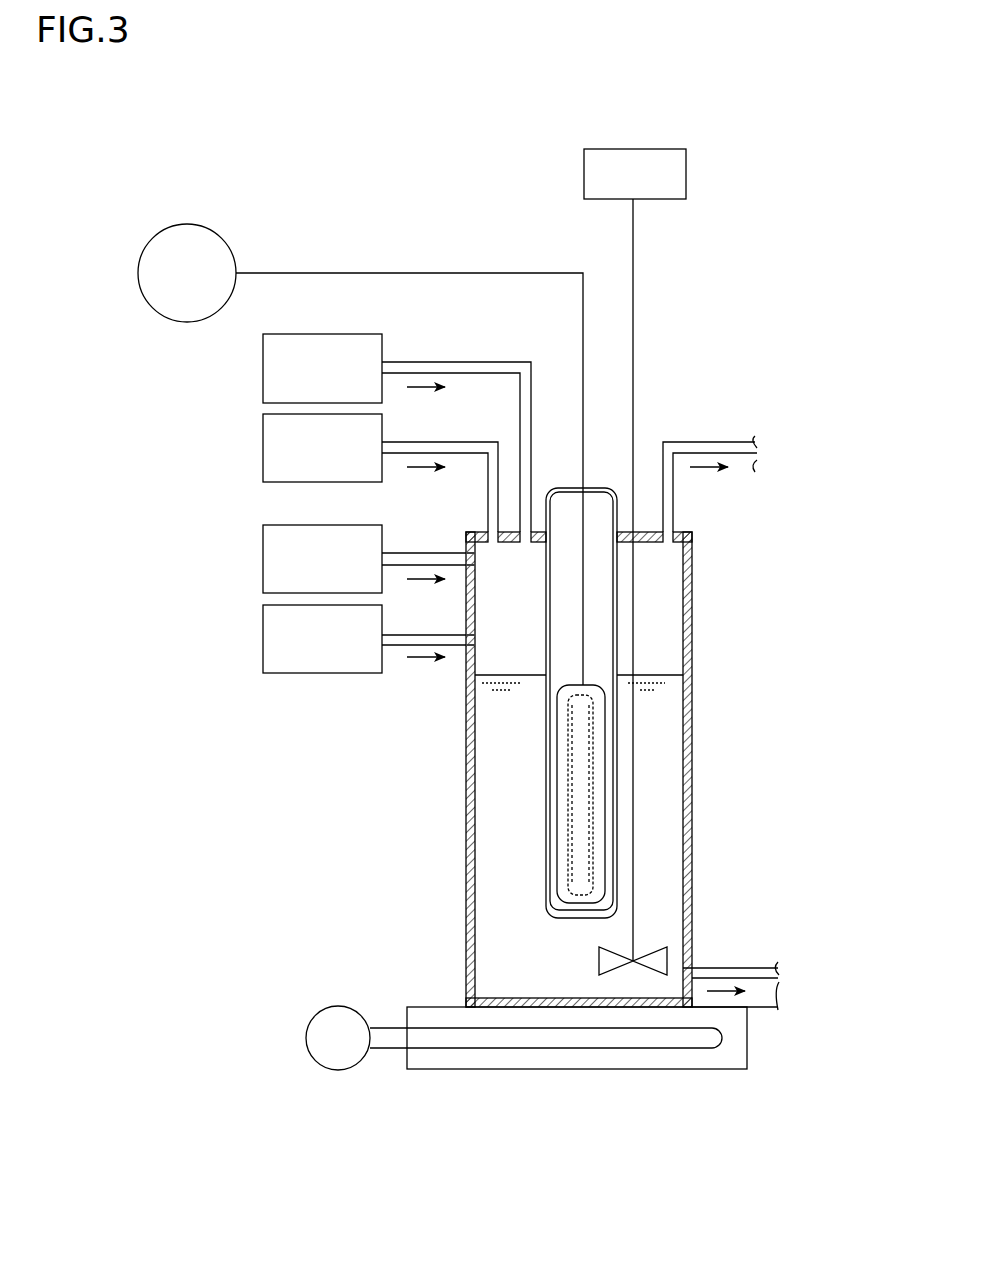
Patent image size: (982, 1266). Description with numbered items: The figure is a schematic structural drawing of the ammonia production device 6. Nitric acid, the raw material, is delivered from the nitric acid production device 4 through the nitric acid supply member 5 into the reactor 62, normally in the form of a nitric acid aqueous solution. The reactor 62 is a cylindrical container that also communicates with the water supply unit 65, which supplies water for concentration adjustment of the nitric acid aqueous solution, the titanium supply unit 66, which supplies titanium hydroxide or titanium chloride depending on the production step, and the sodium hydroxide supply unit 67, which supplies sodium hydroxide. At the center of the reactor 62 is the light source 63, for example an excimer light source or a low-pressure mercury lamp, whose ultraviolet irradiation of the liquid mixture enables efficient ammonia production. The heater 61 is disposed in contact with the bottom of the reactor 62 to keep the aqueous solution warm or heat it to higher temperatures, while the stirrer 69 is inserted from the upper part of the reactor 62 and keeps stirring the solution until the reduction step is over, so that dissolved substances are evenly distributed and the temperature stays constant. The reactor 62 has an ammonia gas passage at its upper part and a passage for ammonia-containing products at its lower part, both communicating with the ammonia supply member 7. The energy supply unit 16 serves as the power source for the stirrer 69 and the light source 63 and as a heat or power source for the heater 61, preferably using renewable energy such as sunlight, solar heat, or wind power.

The nitric acid production device 4 is at (263, 383).
The nitric acid supply member 5 is at (495, 362).
The ammonia production device 6 is at (762, 266).
The ammonia supply member 7 is at (708, 442).
The energy supply unit 16 is at (185, 228).
The heater 61 is at (568, 1049).
The reactor 62 is at (466, 788).
The light source 63 is at (587, 803).
The water supply unit 65 is at (263, 463).
The titanium supply unit 66 is at (263, 575).
The sodium hydroxide supply unit 67 is at (263, 656).
The stirrer 69 is at (636, 618).